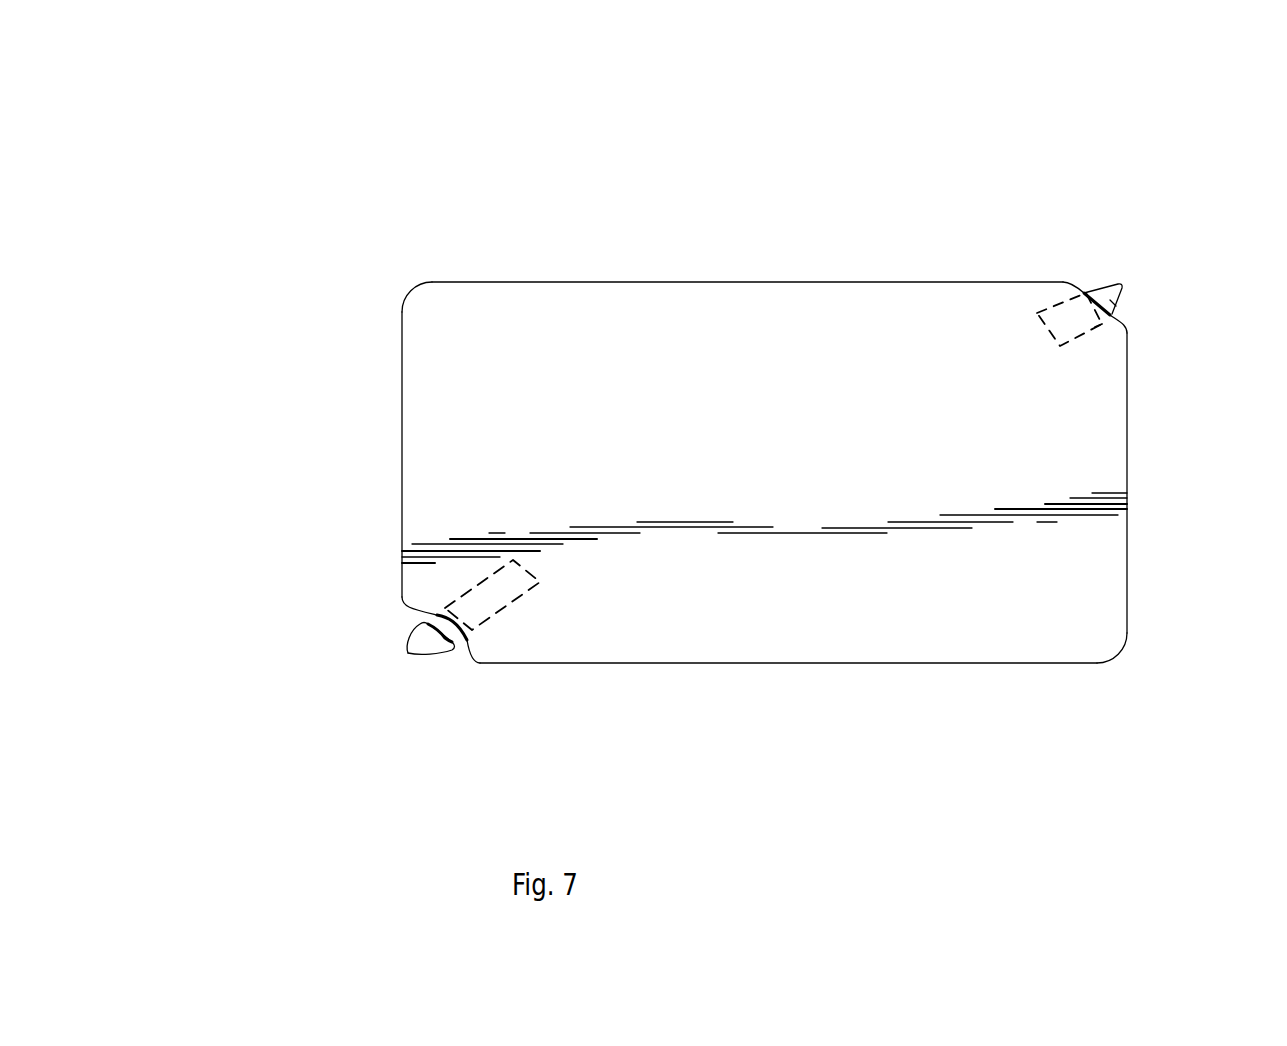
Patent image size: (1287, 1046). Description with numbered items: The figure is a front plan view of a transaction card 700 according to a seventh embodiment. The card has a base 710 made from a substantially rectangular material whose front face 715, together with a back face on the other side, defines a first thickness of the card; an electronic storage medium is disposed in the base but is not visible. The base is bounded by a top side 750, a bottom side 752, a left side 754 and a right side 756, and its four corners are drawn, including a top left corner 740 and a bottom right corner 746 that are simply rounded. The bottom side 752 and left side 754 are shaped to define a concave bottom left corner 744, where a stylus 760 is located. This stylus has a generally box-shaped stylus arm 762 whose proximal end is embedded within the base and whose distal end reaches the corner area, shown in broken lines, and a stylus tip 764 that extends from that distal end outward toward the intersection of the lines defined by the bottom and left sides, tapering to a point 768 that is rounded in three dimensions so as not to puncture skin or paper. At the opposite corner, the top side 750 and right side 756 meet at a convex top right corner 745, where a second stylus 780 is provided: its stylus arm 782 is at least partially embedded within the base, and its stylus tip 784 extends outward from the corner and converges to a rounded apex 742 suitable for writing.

The transaction card 700 is at (884, 114).
The base 710 is at (895, 312).
The front face 715 is at (817, 474).
The first corner 740 is at (408, 290).
The apex 742 is at (1123, 285).
The bottom left corner 744 is at (444, 600).
The top right corner 745 is at (1085, 293).
The fourth corner 746 is at (1118, 653).
The top side 750 is at (708, 280).
The bottom side 752 is at (793, 664).
The left side 754 is at (402, 453).
The right side 756 is at (1127, 473).
The stylus 760 is at (375, 637).
The stylus arm 762 is at (497, 602).
The stylus tip 764 is at (425, 643).
The point 768 is at (410, 653).
The second stylus 780 is at (1063, 318).
The stylus arm 782 is at (1093, 335).
The stylus tip 784 is at (1113, 298).